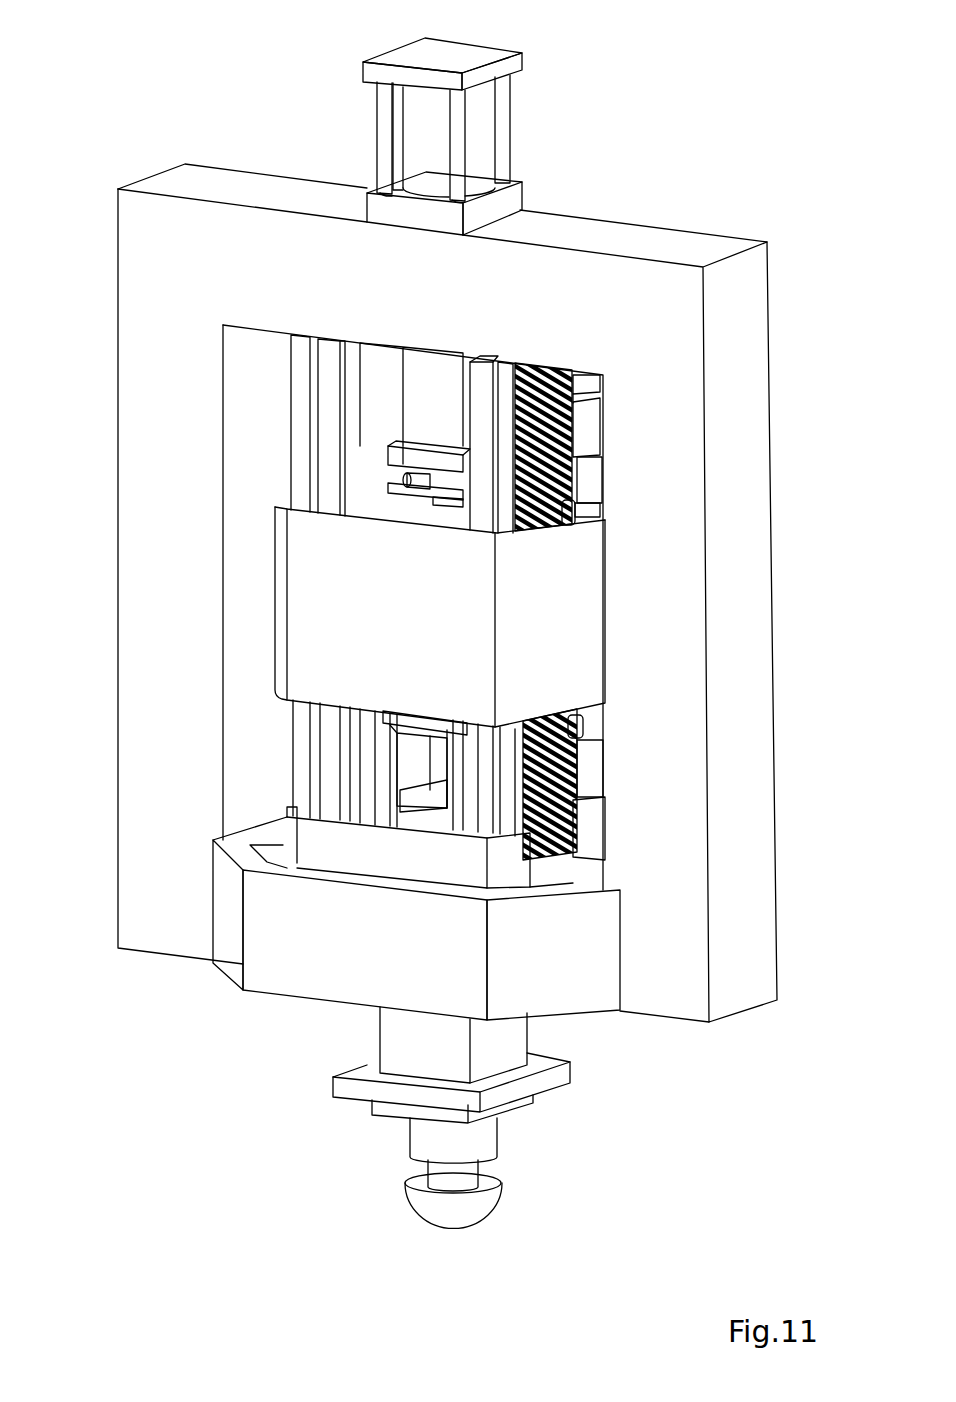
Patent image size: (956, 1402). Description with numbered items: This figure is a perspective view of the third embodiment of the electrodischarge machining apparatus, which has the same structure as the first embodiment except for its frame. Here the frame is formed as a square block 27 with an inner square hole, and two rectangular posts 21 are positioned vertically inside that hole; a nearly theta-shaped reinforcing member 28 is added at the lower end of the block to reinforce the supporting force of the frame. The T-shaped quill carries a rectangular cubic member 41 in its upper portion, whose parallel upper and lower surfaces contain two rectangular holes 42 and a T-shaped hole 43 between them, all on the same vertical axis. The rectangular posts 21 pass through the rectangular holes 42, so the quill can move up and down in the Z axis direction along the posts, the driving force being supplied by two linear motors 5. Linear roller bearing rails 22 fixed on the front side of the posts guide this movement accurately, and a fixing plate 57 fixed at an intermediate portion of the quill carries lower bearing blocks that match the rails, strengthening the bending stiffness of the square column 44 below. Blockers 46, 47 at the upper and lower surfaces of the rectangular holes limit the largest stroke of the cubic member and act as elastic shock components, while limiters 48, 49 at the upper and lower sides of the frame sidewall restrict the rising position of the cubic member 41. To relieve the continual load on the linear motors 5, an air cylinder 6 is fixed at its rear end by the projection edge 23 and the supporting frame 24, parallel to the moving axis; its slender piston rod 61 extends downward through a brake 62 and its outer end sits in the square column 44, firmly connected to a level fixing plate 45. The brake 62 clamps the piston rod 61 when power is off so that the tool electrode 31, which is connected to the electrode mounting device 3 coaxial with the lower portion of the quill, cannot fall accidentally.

The electrode mounting device 3 is at (563, 1080).
The linear motor 5 is at (578, 488).
The air cylinder 6 is at (472, 137).
The rectangular post 21 is at (515, 391).
The linear roller bearing rail 22 is at (503, 381).
The projection edge 23 is at (470, 62).
The supporting frame 24 is at (500, 120).
The square block 27 is at (752, 580).
The base block 28 is at (330, 970).
The tool electrode 31 is at (470, 1213).
The rectangular cubic member 41 is at (318, 655).
The rectangular hole 42 is at (275, 508).
The T-shaped hole 43 is at (407, 514).
The square column 44 is at (510, 1047).
The level fixing plate 45 is at (350, 812).
The blocker 46 is at (573, 502).
The blocker 47 is at (573, 726).
The limiter 48 is at (587, 425).
The limiter 49 is at (597, 833).
The fixing plate 57 is at (343, 847).
The piston rod 61 is at (400, 521).
The brake 62 is at (388, 446).